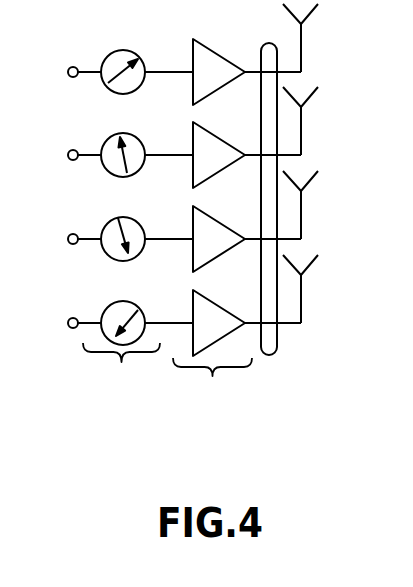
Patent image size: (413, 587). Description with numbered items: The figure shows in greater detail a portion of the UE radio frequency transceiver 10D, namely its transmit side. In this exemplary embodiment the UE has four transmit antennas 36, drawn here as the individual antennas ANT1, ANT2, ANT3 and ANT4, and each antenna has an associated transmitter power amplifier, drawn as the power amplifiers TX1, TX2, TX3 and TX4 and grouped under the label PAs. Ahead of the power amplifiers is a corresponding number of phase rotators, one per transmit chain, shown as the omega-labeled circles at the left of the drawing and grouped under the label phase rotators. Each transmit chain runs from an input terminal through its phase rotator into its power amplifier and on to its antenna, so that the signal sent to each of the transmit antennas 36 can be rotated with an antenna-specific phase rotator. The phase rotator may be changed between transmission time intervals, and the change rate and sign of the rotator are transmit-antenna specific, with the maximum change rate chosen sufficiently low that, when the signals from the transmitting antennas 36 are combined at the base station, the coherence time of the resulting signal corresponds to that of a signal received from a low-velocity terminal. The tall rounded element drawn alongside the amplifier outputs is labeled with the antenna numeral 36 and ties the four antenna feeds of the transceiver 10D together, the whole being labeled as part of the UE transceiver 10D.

The transmit antennas 36 is at (275, 351).
The radio frequency (RF) transceiver 10D is at (205, 243).
The transmit power amplifier 1 TX1 is at (219, 72).
The transmit power amplifier 2 TX2 is at (219, 155).
The transmit power amplifier 3 TX3 is at (219, 239).
The transmit power amplifier 4 TX4 is at (219, 323).
The antenna 1 ANT1 is at (319, 42).
The antenna 2 ANT2 is at (319, 125).
The antenna 3 ANT3 is at (319, 209).
The antenna 4 ANT4 is at (319, 293).